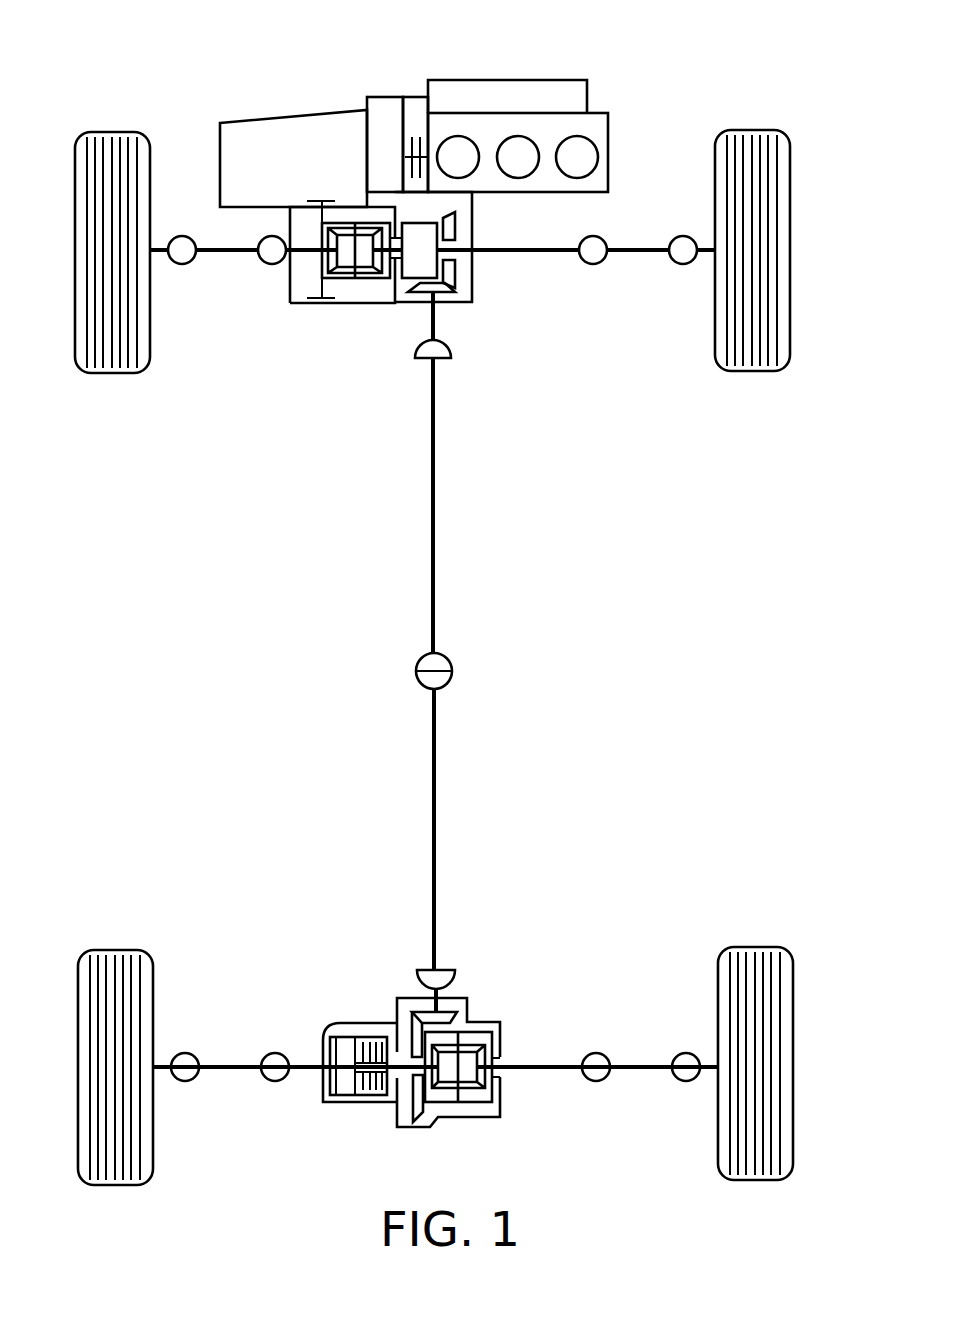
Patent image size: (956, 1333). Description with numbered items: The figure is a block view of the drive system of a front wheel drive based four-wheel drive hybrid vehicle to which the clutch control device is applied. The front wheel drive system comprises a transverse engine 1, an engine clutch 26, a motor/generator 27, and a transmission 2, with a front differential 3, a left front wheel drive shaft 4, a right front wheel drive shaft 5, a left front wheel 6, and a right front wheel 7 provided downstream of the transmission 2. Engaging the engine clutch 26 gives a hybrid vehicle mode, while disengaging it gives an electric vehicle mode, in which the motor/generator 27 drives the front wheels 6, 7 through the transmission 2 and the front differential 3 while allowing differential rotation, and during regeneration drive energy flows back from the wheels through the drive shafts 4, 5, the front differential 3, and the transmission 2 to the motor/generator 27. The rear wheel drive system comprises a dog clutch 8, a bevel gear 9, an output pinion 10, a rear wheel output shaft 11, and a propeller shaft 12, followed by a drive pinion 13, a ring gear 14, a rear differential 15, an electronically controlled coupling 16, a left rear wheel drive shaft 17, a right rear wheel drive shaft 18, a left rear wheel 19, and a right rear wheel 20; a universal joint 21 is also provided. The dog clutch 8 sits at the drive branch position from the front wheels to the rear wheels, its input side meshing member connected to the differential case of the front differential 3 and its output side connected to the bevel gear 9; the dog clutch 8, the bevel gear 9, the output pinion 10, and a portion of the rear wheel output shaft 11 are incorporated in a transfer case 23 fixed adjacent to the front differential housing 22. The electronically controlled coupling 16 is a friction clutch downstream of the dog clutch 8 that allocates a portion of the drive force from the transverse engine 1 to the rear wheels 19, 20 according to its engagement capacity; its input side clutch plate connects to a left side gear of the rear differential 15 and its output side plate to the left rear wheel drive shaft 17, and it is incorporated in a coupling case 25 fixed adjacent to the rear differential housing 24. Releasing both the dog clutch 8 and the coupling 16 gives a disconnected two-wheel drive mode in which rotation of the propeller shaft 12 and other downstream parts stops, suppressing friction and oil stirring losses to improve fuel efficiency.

The transverse engine 1 is at (527, 78).
The transmission 2 is at (272, 110).
The front differential 3 is at (355, 284).
The left front wheel drive shaft 4 is at (215, 255).
The right front wheel drive shaft 5 is at (638, 247).
The left front wheel 6 is at (112, 132).
The right front wheel 7 is at (760, 130).
The dog clutch 8 is at (427, 217).
The bevel gear 9 is at (452, 270).
The output pinion 10 is at (420, 300).
The rear wheel output shaft 11 is at (437, 322).
The propeller shaft 12 is at (437, 738).
The drive pinion 13 is at (448, 1008).
The ring gear 14 is at (414, 1106).
The rear differential 15 is at (452, 1106).
The electronically controlled coupling 16 is at (357, 1034).
The left rear wheel drive shaft 17 is at (225, 1072).
The right rear wheel drive shaft 18 is at (640, 1070).
The left rear wheel 19 is at (113, 950).
The right rear wheel 20 is at (762, 947).
The universal joint 21 is at (178, 264).
The front differential housing 22 is at (305, 305).
The transfer case 23 is at (463, 303).
The rear differential housing 24 is at (492, 1120).
The coupling case 25 is at (345, 1103).
The engine clutch 26 is at (418, 128).
The motor/generator 27 is at (388, 95).